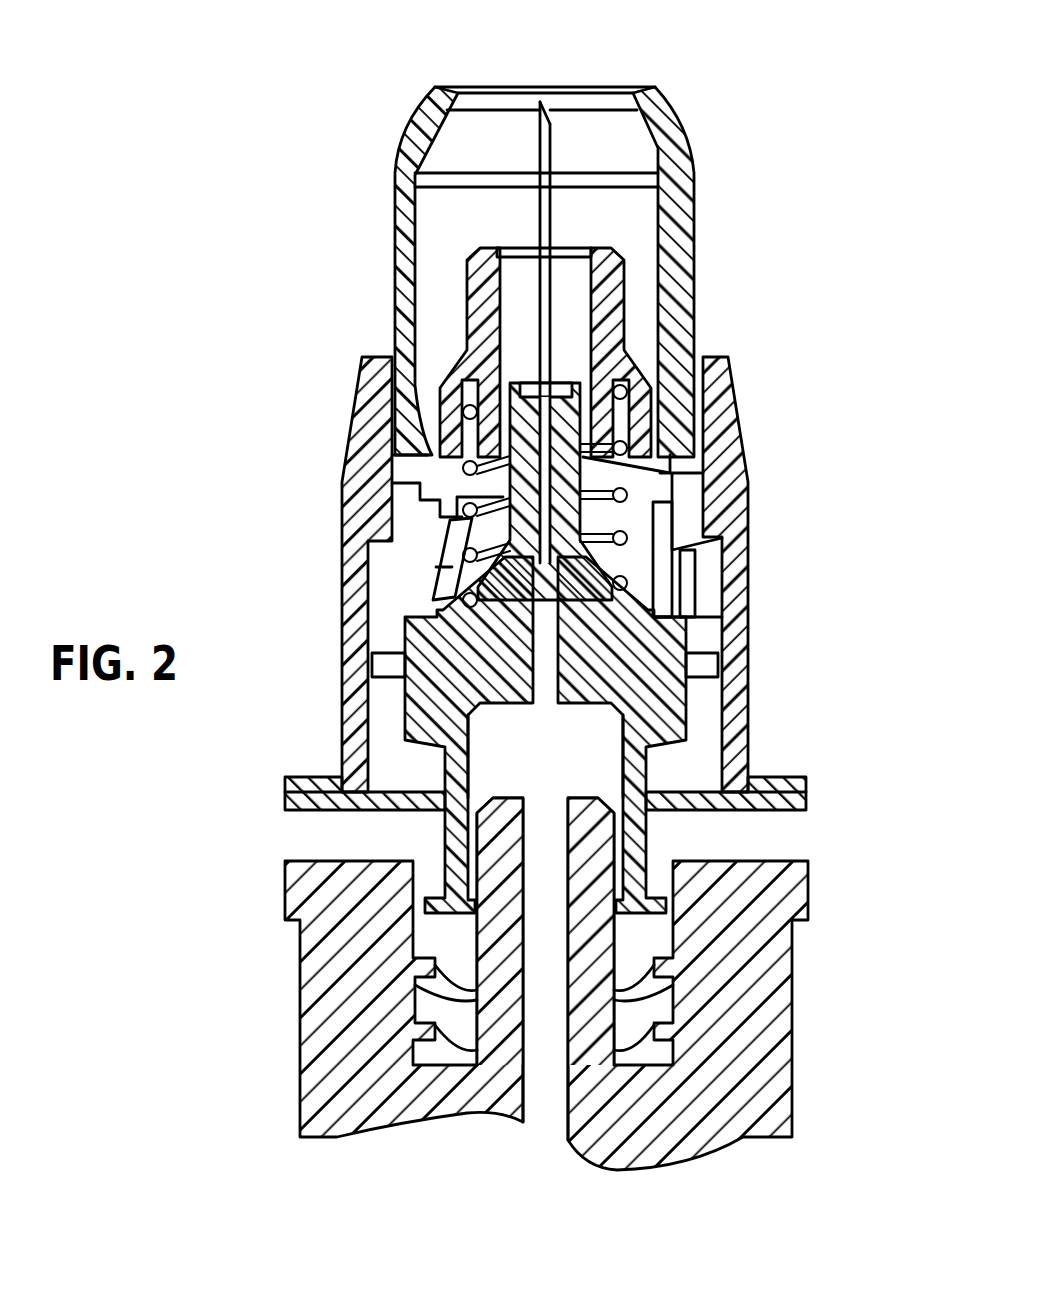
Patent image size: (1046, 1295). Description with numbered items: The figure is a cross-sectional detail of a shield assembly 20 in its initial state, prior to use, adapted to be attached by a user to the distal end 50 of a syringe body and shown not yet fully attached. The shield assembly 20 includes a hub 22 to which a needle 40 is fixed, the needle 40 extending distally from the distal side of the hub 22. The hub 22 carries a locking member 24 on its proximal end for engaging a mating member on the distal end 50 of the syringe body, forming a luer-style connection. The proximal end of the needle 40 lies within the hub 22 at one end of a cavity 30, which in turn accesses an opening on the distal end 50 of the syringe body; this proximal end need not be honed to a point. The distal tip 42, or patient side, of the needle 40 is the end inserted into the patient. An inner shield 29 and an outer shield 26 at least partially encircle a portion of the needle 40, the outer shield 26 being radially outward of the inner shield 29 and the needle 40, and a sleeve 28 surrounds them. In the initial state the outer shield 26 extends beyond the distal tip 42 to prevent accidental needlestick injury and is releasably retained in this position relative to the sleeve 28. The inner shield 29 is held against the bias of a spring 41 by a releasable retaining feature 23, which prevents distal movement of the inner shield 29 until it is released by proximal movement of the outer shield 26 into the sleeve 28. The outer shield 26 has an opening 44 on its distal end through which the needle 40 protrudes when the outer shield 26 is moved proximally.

The shield assembly 20 is at (208, 368).
The hub 22 is at (648, 698).
The valve member 23 is at (660, 468).
The locking member 24 is at (640, 912).
The outer shield 26 is at (678, 218).
The sleeve 28 is at (360, 505).
The inner shield 29 is at (620, 282).
The cavity 30 is at (518, 745).
The needle 40 is at (540, 207).
The spring 41 is at (626, 532).
The distal tip of the needle 42 is at (552, 122).
The opening 44 is at (513, 90).
The distal end of the syringe body 50 is at (290, 876).